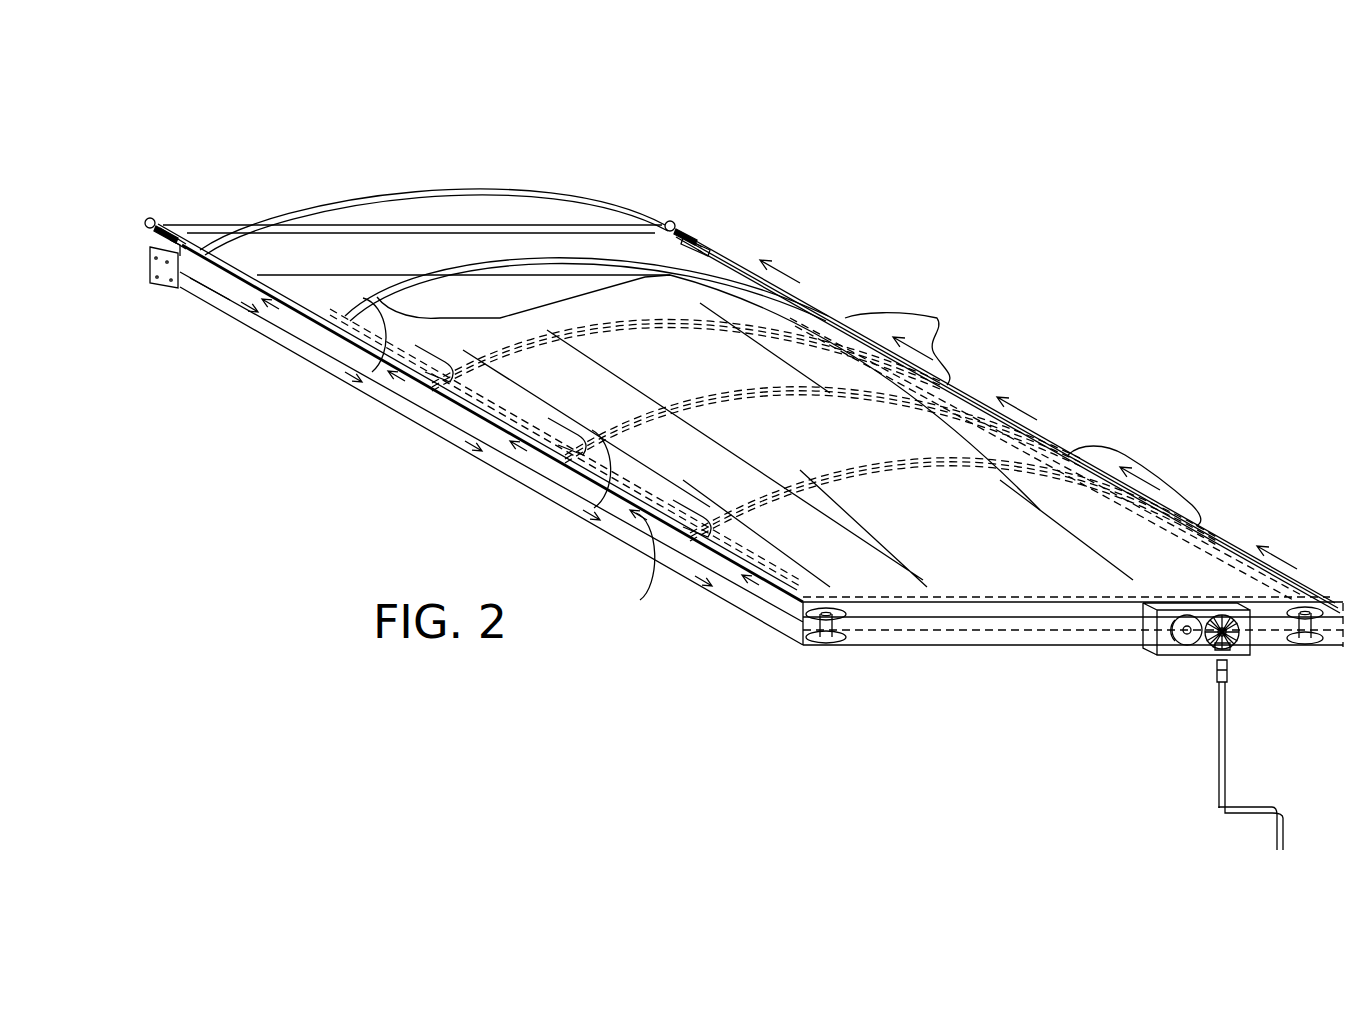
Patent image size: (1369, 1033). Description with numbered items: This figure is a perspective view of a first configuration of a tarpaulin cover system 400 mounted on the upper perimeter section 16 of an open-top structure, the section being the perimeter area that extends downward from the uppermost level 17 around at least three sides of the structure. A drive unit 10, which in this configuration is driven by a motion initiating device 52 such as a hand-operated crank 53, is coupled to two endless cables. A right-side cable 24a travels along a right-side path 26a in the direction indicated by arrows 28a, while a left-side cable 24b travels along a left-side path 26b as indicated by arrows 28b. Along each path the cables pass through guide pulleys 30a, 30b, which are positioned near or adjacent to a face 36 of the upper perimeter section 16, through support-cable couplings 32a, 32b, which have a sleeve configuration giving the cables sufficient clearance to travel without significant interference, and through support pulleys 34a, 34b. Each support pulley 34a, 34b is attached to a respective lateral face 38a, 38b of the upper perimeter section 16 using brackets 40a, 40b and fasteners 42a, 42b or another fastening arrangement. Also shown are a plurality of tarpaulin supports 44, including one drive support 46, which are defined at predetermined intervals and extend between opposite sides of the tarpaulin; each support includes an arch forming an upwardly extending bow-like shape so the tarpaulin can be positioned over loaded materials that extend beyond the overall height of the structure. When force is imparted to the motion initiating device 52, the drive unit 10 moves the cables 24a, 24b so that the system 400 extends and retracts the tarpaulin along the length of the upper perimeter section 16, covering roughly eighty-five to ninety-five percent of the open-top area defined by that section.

The drive unit 10 is at (1256, 662).
The upper perimeter section 16 is at (740, 615).
The uppermost level 17 is at (228, 225).
The right-side cable 24a is at (1228, 548).
The left-side cable 24b is at (630, 515).
The right-side path 26a is at (1028, 401).
The left-side path 26b is at (440, 432).
The arrows 28a is at (1032, 413).
The arrows 28b is at (320, 352).
The guide pulley 30a is at (1318, 605).
The guide pulley 30b is at (818, 645).
The support-cable coupling 32a is at (905, 325).
The support-cable coupling 32b is at (290, 333).
The support pulley 34a is at (680, 228).
The support pulley 34b is at (165, 224).
The face 36 is at (930, 648).
The lateral face 38a is at (813, 316).
The lateral face 38b is at (203, 292).
The bracket 40a is at (698, 240).
The bracket 40b is at (158, 284).
The fastener 42a is at (668, 221).
The fastener 42b is at (150, 218).
The tarpaulin supports 44 is at (556, 252).
The drive support 46 is at (432, 185).
The motion initiating device 52 is at (1218, 792).
The crank 53 is at (1218, 710).
The tarpaulin cover system 400 is at (1128, 333).